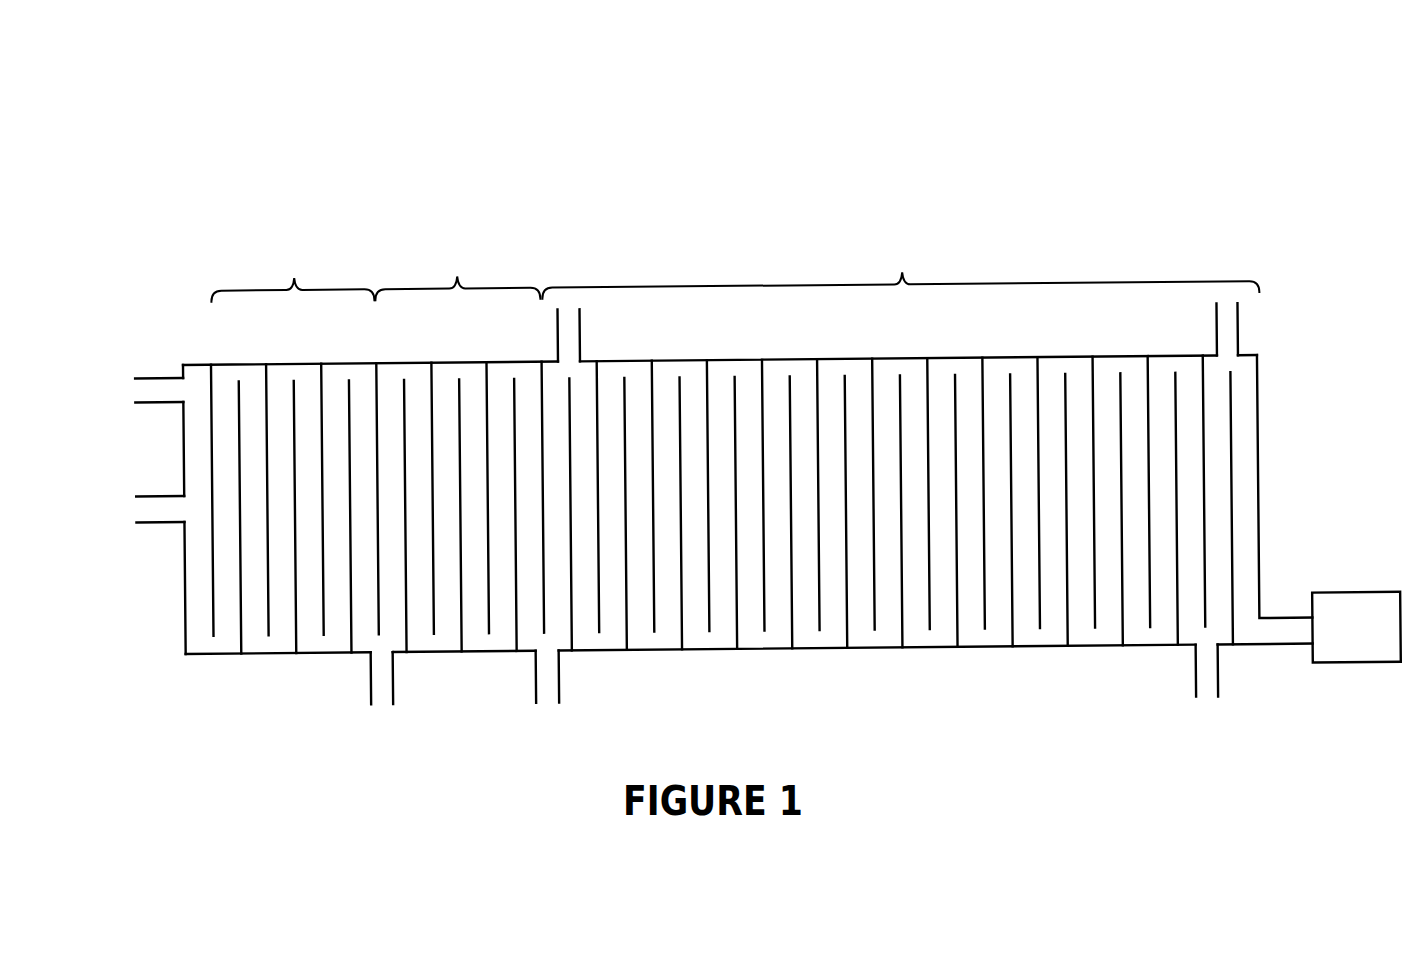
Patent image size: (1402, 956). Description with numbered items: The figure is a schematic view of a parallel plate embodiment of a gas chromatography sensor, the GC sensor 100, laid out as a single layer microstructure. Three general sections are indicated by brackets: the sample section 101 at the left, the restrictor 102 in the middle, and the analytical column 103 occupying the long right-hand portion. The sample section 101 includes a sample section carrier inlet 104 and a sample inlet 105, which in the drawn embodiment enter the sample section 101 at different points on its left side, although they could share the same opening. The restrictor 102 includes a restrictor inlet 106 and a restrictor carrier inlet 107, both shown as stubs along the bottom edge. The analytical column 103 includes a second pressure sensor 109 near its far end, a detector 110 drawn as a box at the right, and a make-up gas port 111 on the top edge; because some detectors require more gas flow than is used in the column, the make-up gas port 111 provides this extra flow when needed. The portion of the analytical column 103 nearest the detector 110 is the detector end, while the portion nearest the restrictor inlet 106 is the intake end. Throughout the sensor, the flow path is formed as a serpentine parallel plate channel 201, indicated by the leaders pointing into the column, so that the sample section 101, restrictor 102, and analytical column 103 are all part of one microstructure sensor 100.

The GC sensor 100 is at (841, 124).
The sample section 101 is at (293, 446).
The restrictor 102 is at (459, 445).
The analytical column 103 is at (902, 444).
The sample section carrier inlet 104 is at (157, 377).
The sample inlet 105 is at (157, 493).
The restrictor inlet 106 is at (367, 677).
The restrictor carrier inlet 107 is at (533, 683).
The second pressure sensor 109 is at (1192, 673).
The detector 110 is at (1356, 627).
The make-up gas port 111 is at (1240, 332).
The parallel plate channel 201 is at (696, 580).